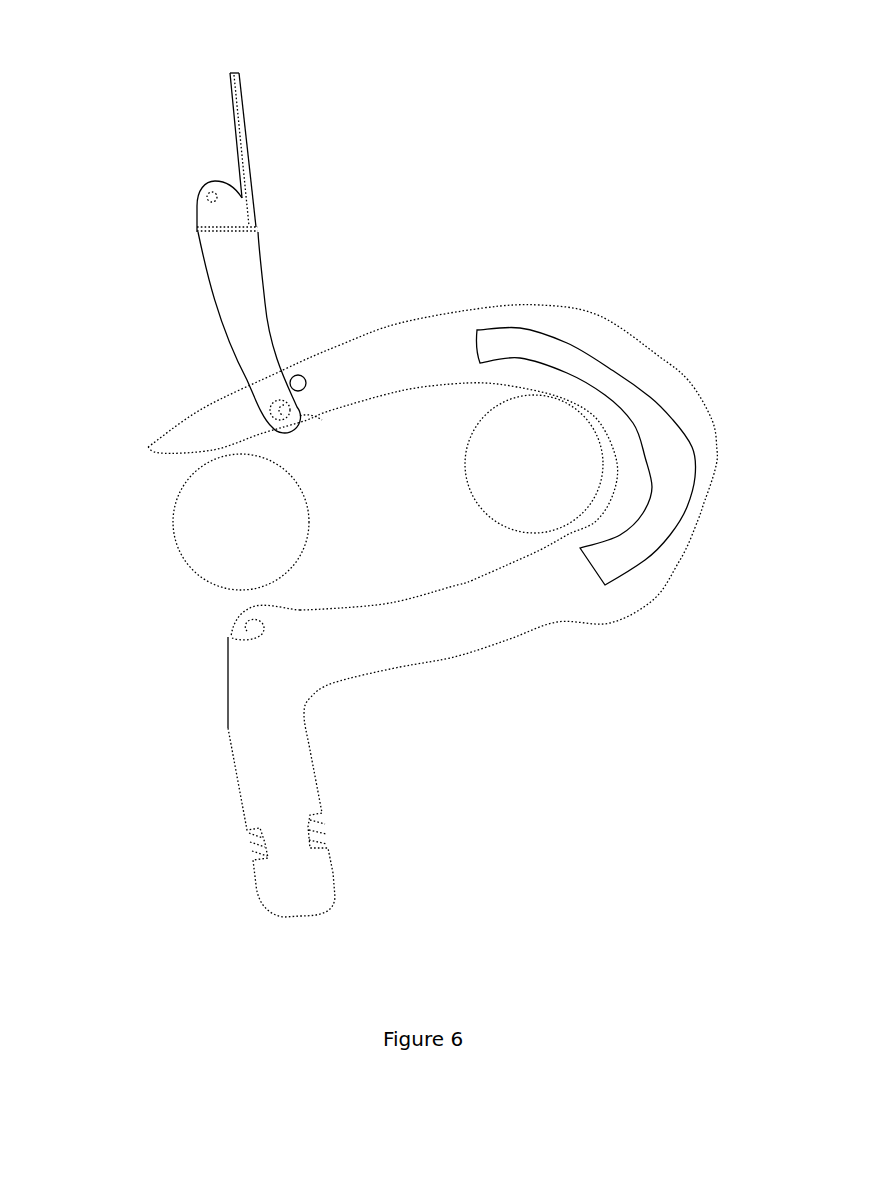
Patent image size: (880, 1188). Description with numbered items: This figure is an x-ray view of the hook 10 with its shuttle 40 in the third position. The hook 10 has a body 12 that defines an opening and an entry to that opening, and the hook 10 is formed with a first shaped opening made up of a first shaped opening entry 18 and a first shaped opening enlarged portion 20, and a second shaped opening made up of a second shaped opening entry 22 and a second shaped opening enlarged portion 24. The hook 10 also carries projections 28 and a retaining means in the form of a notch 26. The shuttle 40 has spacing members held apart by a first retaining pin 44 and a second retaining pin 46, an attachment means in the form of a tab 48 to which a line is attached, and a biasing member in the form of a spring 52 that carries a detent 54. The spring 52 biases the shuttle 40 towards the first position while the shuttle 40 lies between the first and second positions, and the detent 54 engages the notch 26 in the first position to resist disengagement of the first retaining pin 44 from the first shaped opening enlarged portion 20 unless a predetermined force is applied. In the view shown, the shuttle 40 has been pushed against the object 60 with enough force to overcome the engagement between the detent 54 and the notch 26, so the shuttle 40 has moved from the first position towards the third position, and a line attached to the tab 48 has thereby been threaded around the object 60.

The hook 10 is at (81, 54).
The body 12 is at (515, 624).
The first shaped opening entry 18 is at (217, 635).
The first shaped opening enlarged portion 20 is at (244, 643).
The second shaped opening entry 22 is at (319, 424).
The second shaped opening enlarged portion 24 is at (266, 396).
The notch 26 is at (300, 602).
The projections 28 is at (309, 365).
The shuttle 40 is at (293, 270).
The first retaining pin 44 is at (195, 191).
The second retaining pin 46 is at (266, 411).
The tab 48 is at (250, 133).
The spring 52 is at (222, 245).
The detent 54 is at (184, 230).
The object 60 is at (522, 481).